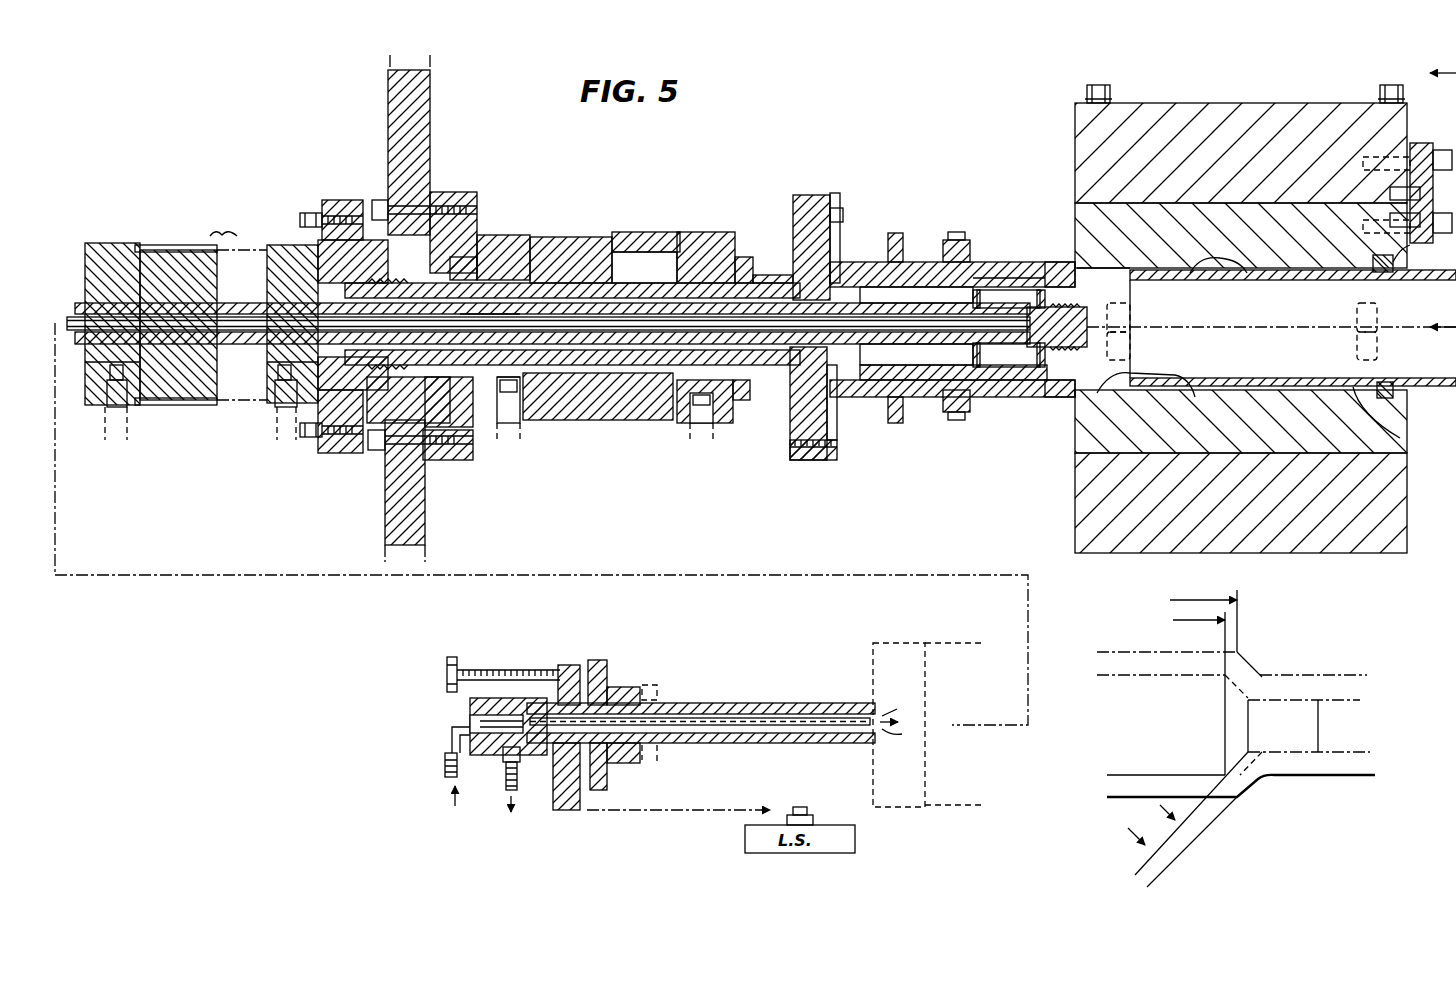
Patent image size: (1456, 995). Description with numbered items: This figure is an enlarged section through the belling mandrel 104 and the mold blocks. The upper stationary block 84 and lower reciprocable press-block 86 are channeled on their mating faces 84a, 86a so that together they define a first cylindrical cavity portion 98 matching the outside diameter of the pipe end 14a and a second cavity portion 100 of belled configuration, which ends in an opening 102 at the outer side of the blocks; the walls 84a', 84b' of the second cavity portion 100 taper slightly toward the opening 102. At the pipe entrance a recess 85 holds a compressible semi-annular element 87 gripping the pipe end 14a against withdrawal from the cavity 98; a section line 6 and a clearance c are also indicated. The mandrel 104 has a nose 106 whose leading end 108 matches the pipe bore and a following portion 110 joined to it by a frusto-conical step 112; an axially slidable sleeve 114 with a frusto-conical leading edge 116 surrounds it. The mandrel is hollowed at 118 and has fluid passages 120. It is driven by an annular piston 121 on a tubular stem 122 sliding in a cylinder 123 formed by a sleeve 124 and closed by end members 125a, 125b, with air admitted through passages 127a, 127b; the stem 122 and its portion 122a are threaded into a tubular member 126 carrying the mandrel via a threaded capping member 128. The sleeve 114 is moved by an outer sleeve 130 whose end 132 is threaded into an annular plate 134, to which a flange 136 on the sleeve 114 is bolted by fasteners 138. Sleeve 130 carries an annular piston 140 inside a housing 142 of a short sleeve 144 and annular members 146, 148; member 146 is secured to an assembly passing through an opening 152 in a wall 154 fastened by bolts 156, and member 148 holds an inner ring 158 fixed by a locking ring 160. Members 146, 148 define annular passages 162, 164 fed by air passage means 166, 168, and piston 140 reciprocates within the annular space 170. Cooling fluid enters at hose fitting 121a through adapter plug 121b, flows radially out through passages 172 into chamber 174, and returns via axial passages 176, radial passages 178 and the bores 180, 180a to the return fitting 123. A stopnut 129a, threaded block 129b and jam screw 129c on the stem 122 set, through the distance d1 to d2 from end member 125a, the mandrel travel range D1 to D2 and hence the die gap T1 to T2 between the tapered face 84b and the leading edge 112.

The upper stationary block 84 is at (1077, 210).
The lower reciprocable press-block 86 is at (1080, 437).
The mating face 84a is at (1271, 329).
The cavity wall 84a' is at (1293, 290).
The lower liner 84b' is at (1293, 368).
The tapered face 84b is at (1241, 791).
The recess 85 is at (1408, 246).
The mating face 86a is at (1205, 377).
The compressible semi-annular element 87 is at (1378, 262).
The first cavity portion 98 is at (1393, 388).
The second cavity portion 100 is at (1245, 373).
The opening 102 is at (1073, 390).
The belling mandrel 104 is at (962, 205).
The nose 106 is at (990, 278).
The leading end 108 is at (1047, 290).
The following portion 110 is at (918, 262).
The frusto-conical step 112 is at (993, 397).
The axially slidable sleeve 114 is at (895, 423).
The annular leading edge 116 is at (1076, 262).
The hollow 118 is at (898, 364).
The passages 120 is at (923, 323).
The annular piston 121 is at (183, 250).
The hose fitting 121a is at (447, 763).
The threaded adapter plug 121b is at (470, 703).
The tubular stem 122 is at (74, 303).
The tube flange 122a is at (556, 745).
The cylinder 123 is at (155, 245).
The sleeve 124 is at (243, 262).
The annular end member 125a is at (93, 405).
The annular end member 125b is at (303, 400).
The tubular member 126 is at (483, 305).
The air passage 127a is at (117, 400).
The air passage 127b is at (285, 408).
The threaded capping member 128 is at (1082, 292).
The stopnut 129a is at (610, 660).
The threaded block 129b is at (568, 662).
The jam screw 129c is at (442, 665).
The outer sleeve 130 is at (560, 290).
The end 132 is at (835, 263).
The annular plate 134 is at (803, 195).
The flange 136 is at (838, 460).
The fasteners 138 is at (803, 462).
The annular piston 140 is at (562, 260).
The cylindrical housing 142 is at (655, 237).
The short sleeve 144 is at (627, 420).
The annular member 146 is at (493, 235).
The annular member 148 is at (692, 232).
The opening 152 is at (437, 223).
The wall 154 is at (425, 110).
The bolts 156 is at (490, 200).
The inner ring 158 is at (763, 275).
The locking ring 160 is at (745, 257).
The annular passage 162 is at (512, 412).
The annular passage 164 is at (643, 423).
The air passage means 166 is at (507, 423).
The air passage means 168 is at (703, 437).
The annular space 170 is at (587, 420).
The passages 172 is at (1026, 304).
The chamber 174 is at (1024, 356).
The axially extending passages 176 is at (960, 372).
The radial passages 178 is at (864, 297).
The bore 180 is at (782, 348).
The bore 180a is at (727, 744).
The pipe end 14a is at (1190, 262).
The section line 6 is at (1430, 207).
The clearance c is at (1172, 346).
The stopnut adjustment distance d1 is at (657, 766).
The stopnut adjustment distance d2 is at (640, 760).
The mandrel adjustment position D1 is at (1188, 691).
The mandrel adjustment position D2 is at (1221, 620).
The die gap T1 is at (1170, 870).
The die gap T2 is at (1200, 840).